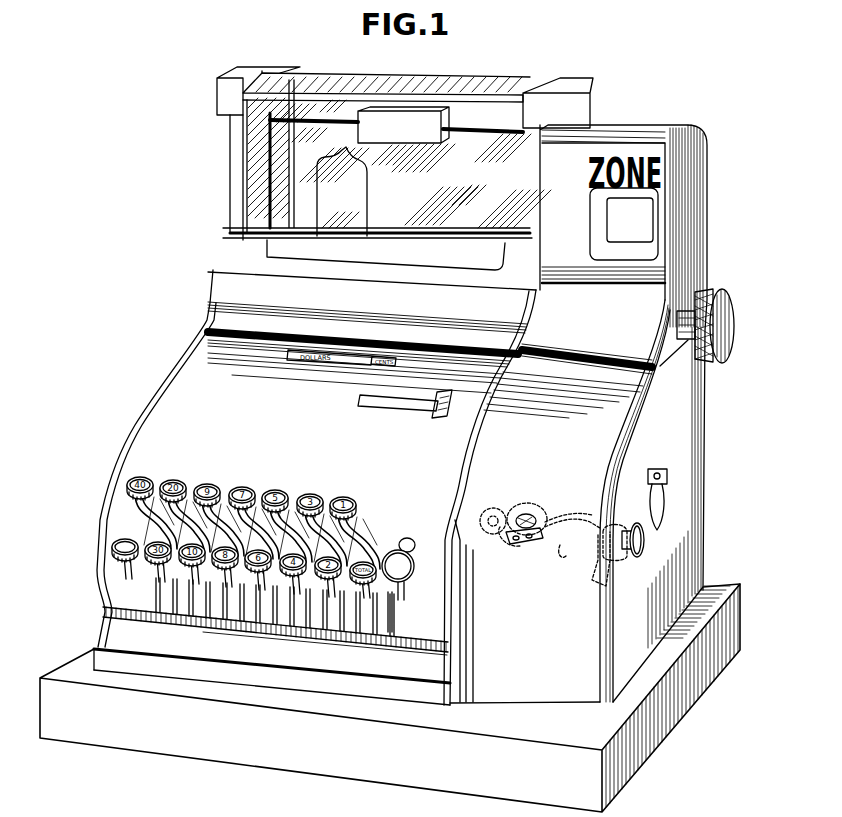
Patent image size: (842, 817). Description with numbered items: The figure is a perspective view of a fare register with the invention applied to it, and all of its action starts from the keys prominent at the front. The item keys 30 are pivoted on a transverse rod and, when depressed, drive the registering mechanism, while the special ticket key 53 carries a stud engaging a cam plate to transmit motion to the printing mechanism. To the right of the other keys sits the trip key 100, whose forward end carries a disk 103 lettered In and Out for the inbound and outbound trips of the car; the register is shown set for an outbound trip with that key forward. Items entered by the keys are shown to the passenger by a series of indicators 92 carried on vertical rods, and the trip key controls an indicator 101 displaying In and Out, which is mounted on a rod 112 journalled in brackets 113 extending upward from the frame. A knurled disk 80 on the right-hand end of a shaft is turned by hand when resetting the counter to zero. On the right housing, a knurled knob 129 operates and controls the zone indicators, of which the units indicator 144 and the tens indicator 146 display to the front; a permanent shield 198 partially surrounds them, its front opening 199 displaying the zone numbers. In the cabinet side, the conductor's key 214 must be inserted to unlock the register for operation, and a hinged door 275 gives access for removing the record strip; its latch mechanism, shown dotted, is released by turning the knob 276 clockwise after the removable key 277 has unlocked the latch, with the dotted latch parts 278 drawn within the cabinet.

The rod 112 is at (483, 125).
The brackets 113 is at (270, 160).
The indicator 101 is at (435, 143).
The indicators 92 is at (367, 181).
The opening 199 is at (653, 197).
The permanent shield 198 is at (653, 252).
The tens indicator 146 is at (620, 243).
The units indicator 144 is at (641, 243).
The knurled knob 129 is at (718, 300).
The knurled disk 80 is at (440, 410).
The trip key 100 is at (404, 551).
The disk 103 is at (409, 586).
The keys 30 is at (136, 566).
The special key 53 is at (388, 592).
The conductor's key 214 is at (658, 469).
The knob 276 is at (644, 546).
The gear 278 is at (535, 518).
The removable key 277 is at (517, 546).
The hinged door 275 is at (623, 668).